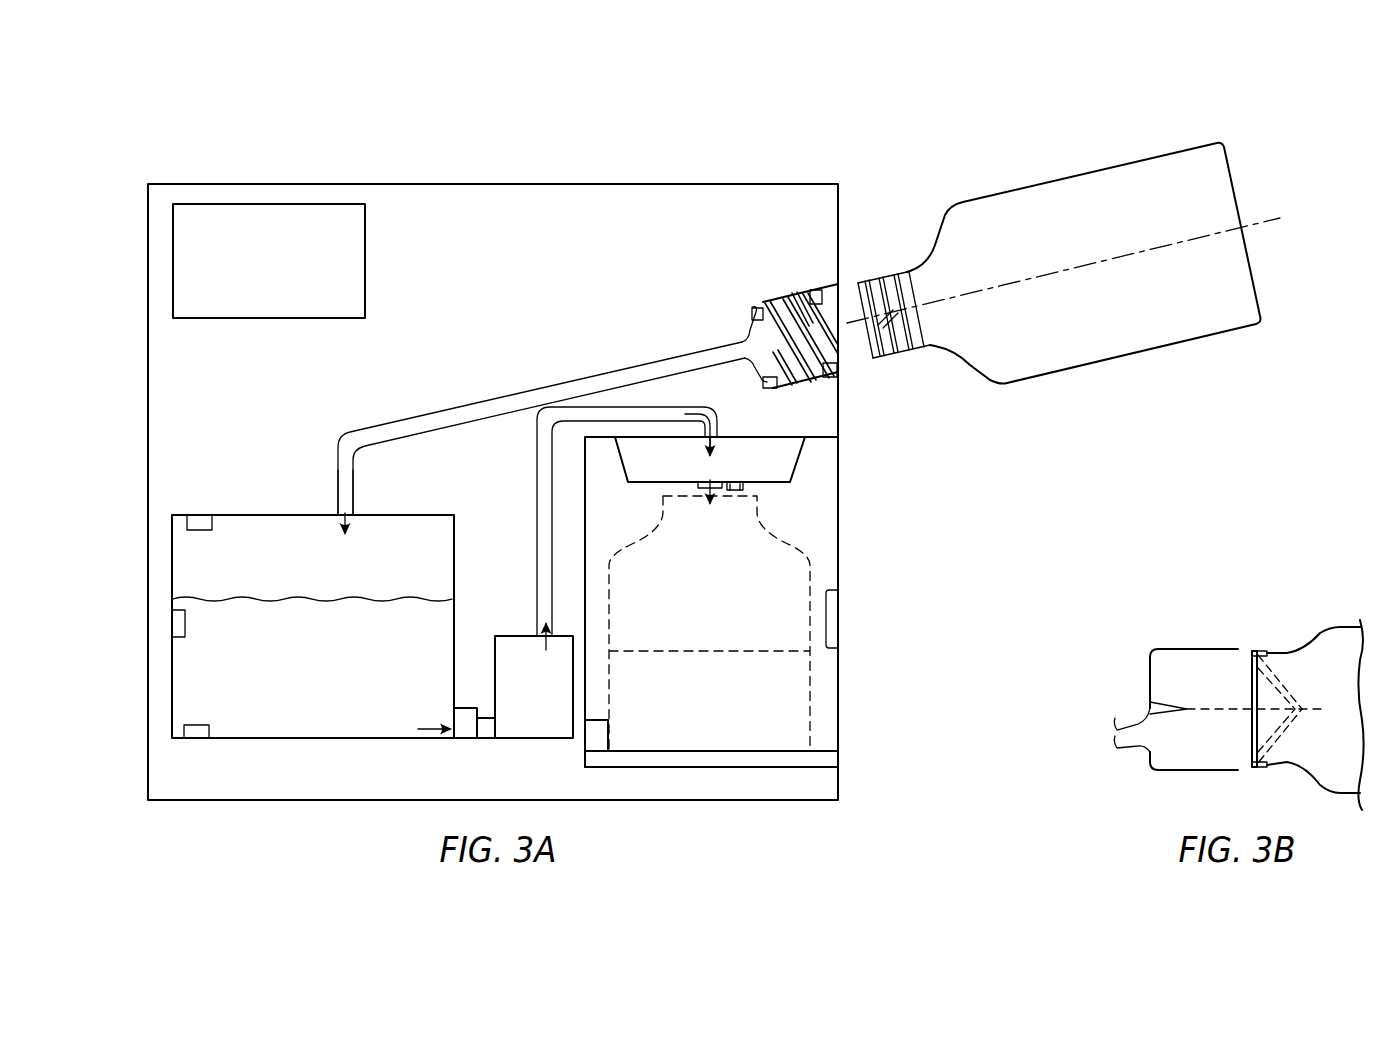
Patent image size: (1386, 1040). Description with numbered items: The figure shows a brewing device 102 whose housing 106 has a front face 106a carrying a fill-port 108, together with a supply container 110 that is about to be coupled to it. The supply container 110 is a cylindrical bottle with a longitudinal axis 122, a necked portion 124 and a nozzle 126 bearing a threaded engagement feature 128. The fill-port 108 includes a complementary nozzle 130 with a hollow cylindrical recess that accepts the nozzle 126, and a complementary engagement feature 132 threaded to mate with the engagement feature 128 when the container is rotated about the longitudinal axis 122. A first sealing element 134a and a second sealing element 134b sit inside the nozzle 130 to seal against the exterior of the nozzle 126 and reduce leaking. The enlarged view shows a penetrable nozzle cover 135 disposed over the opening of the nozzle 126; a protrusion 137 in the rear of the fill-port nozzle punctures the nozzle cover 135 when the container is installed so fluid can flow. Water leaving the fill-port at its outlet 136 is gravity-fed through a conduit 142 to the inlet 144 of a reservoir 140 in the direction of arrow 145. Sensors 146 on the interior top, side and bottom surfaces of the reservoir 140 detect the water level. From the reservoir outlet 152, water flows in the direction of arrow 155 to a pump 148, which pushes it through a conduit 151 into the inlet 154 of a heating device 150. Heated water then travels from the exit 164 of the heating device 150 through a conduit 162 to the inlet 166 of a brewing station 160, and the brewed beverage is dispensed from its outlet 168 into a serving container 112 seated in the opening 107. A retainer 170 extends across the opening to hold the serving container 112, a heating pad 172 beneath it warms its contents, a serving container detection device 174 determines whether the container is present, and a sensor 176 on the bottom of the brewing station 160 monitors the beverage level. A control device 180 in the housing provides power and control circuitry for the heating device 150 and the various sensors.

In FIG. 3A, the brewing device 102 is at (513, 410).
In FIG. 3A, the housing 106 is at (480, 178).
In FIG. 3A, the front face 106a is at (845, 206).
In FIG. 3A, the opening 107 is at (745, 602).
In FIG. 3A, the fill-port 108 is at (777, 315).
In FIG. 3A, the supply container 110 is at (1072, 244).
In FIG. 3B, the supply container 110 is at (1343, 620).
In FIG. 3A, the serving container 112 is at (709, 623).
In FIG. 3A, the longitudinal axis 122 is at (1262, 225).
In FIG. 3A, the necked portion 124 is at (940, 235).
In FIG. 3A, the nozzle 126 is at (887, 268).
In FIG. 3B, the nozzle 126 is at (1280, 650).
In FIG. 3A, the threaded engagement feature 128 is at (905, 352).
In FIG. 3A, the complementary nozzle 130 is at (781, 297).
In FIG. 3B, the complementary nozzle 130 is at (1159, 673).
In FIG. 3A, the complementary engagement feature 132 is at (796, 296).
In FIG. 3A, the first sealing element 134a is at (763, 384).
In FIG. 3A, the second sealing element 134b is at (838, 378).
In FIG. 3A, the nozzle cover 135 is at (750, 318).
In FIG. 3B, the nozzle cover 135 is at (1250, 770).
In FIG. 3A, the outlet 136 is at (742, 336).
In FIG. 3B, the outlet 136 is at (1132, 730).
In FIG. 3B, the protrusion 137 is at (1150, 695).
In FIG. 3A, the reservoir 140 is at (313, 626).
In FIG. 3A, the conduit 142 is at (430, 418).
In FIG. 3A, the inlet 144 is at (333, 508).
In FIG. 3A, the arrow 145 is at (356, 528).
In FIG. 3A, the sensors 146 is at (202, 530).
In FIG. 3A, the pump 148 is at (464, 737).
In FIG. 3A, the heating device 150 is at (526, 656).
In FIG. 3A, the conduit 151 is at (490, 740).
In FIG. 3A, the outlet 152 is at (461, 704).
In FIG. 3A, the inlet 154 is at (500, 745).
In FIG. 3A, the arrow 155 is at (438, 724).
In FIG. 3A, the brewing station 160 is at (710, 459).
In FIG. 3A, the conduit 162 is at (537, 502).
In FIG. 3A, the exit 164 is at (534, 630).
In FIG. 3A, the inlet 166 is at (722, 437).
In FIG. 3A, the outlet 168 is at (698, 485).
In FIG. 3A, the retainer 170 is at (840, 620).
In FIG. 3A, the heating pad 172 is at (750, 752).
In FIG. 3A, the serving container detection device 174 is at (608, 731).
In FIG. 3A, the sensor 176 is at (732, 492).
In FIG. 3A, the control device 180 is at (269, 261).